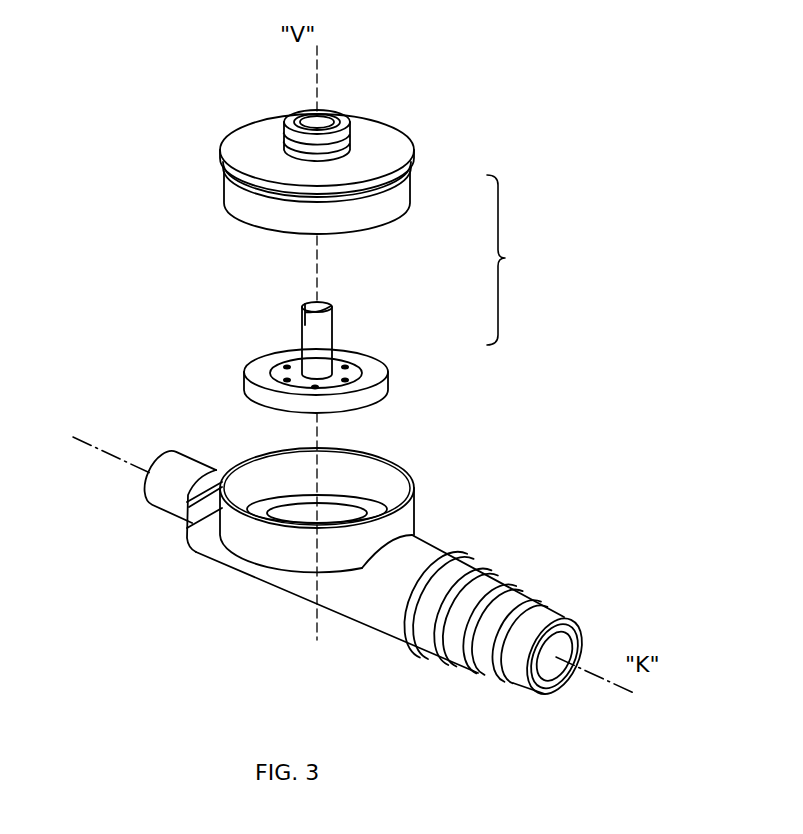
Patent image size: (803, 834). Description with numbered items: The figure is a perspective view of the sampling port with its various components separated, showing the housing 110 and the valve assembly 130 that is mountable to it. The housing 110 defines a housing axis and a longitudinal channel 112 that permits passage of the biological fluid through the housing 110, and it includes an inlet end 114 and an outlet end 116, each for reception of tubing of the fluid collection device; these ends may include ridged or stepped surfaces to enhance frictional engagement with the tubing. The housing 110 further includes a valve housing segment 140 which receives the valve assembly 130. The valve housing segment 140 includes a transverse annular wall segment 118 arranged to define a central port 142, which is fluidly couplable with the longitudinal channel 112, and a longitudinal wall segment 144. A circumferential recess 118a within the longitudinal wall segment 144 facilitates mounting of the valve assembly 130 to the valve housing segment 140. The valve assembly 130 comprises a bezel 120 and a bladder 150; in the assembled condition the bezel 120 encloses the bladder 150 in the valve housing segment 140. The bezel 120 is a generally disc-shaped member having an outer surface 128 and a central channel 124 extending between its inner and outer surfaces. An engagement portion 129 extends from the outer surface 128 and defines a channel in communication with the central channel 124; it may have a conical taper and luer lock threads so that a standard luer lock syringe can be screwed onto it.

The housing 110 is at (442, 553).
The longitudinal channel 112 is at (578, 642).
The inlet end 114 is at (485, 650).
The outlet end 116 is at (160, 495).
The transverse annular wall segment 118 is at (360, 478).
The circumferential recess 118a is at (220, 466).
The bezel 120 is at (394, 193).
The central channel 124 is at (324, 112).
The outer surface 128 is at (370, 134).
The engagement portion 129 is at (292, 133).
The valve assembly 130 is at (518, 260).
The valve housing segment 140 is at (403, 518).
The central port 142 is at (302, 508).
The longitudinal wall segment 144 is at (368, 503).
The bladder 150 is at (355, 355).